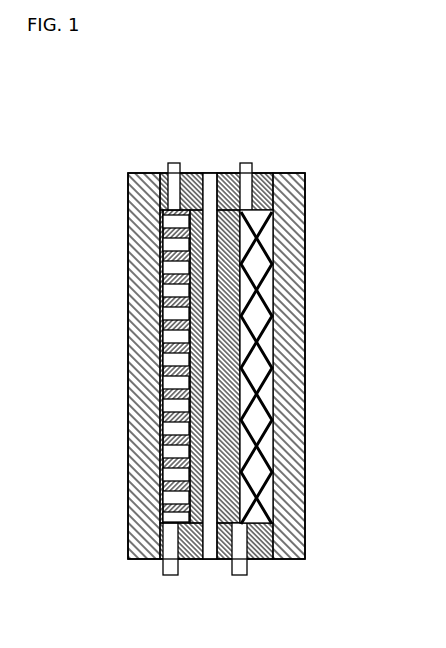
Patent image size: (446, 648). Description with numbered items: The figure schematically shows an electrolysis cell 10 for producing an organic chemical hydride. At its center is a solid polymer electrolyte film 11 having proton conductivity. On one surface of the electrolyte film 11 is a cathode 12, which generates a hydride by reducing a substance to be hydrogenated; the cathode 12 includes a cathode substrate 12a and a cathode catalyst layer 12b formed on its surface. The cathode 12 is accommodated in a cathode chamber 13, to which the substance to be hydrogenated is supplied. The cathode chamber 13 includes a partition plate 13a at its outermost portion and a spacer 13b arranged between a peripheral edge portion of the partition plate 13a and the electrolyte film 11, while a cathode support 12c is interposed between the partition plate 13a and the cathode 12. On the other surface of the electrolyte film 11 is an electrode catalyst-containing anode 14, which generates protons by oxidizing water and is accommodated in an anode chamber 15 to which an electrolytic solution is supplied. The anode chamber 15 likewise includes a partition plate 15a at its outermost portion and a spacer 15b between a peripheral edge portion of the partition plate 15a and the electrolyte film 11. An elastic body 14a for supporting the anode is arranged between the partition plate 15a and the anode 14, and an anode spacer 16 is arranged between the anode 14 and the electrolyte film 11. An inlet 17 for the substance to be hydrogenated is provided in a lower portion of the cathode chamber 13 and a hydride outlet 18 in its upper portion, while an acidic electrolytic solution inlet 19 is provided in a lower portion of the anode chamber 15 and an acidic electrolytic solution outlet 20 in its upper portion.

The electrolysis cell 10 is at (316, 128).
The solid polymer electrolyte film 11 is at (209, 173).
The cathode 12 is at (111, 366).
The cathode substrate 12a is at (172, 291).
The cathode catalyst layer 12b is at (167, 270).
The cathode support 12c is at (161, 355).
The cathode chamber 13 is at (127, 380).
The partition plate 13a is at (128, 403).
The spacer 13b is at (190, 173).
The electrode catalyst-containing anode 14 is at (304, 367).
The elastic body 14a is at (275, 345).
The anode chamber 15 is at (302, 377).
The partition plate 15a is at (305, 390).
The spacer 15b is at (258, 173).
The anode spacer 16 is at (258, 446).
The inlet for substance to be hydrogenated 17 is at (171, 577).
The hydride outlet 18 is at (168, 161).
The acidic electrolytic solution inlet 19 is at (239, 578).
The acidic electrolytic solution outlet 20 is at (247, 163).